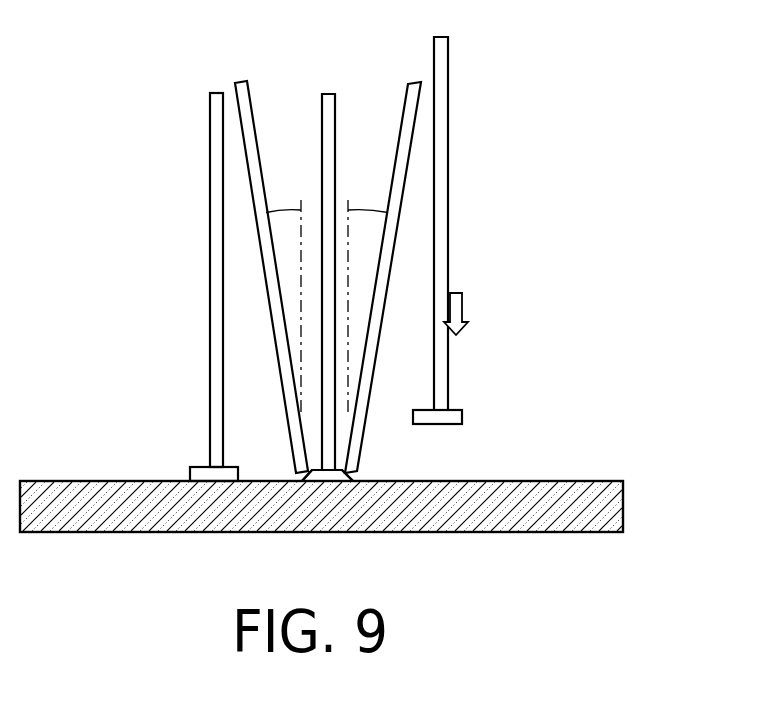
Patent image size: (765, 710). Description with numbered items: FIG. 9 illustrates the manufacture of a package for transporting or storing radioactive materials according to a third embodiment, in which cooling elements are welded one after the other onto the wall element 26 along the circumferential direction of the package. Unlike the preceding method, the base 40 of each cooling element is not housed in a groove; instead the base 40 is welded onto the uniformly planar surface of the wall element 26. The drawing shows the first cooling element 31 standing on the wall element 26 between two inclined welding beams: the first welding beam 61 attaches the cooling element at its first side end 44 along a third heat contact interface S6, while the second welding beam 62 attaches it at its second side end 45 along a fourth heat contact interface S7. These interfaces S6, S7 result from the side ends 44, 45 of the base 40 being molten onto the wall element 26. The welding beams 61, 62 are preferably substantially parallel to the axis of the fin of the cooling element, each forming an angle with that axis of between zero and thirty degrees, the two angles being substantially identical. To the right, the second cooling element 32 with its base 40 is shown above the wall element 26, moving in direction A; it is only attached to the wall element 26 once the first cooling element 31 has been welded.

The wall element 26 is at (512, 488).
The first cooling element 31 is at (329, 116).
The second cooling element 32 is at (440, 138).
The base 40 is at (453, 417).
The first side end 44 is at (302, 478).
The second side end 45 is at (353, 478).
The first welding beam 61 is at (248, 110).
The second welding beam 62 is at (411, 82).
The movement direction arrow A is at (460, 305).
The third heat contact interface S6 is at (295, 482).
The fourth heat contact interface S7 is at (353, 483).